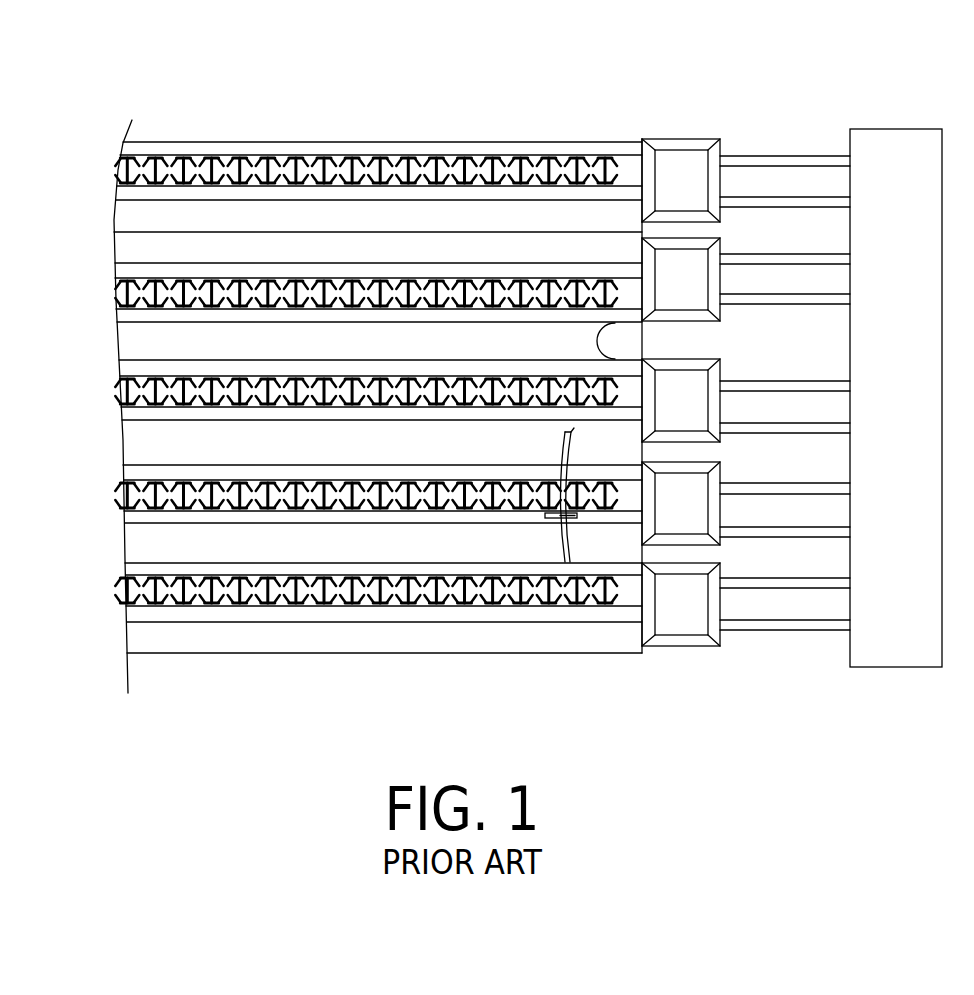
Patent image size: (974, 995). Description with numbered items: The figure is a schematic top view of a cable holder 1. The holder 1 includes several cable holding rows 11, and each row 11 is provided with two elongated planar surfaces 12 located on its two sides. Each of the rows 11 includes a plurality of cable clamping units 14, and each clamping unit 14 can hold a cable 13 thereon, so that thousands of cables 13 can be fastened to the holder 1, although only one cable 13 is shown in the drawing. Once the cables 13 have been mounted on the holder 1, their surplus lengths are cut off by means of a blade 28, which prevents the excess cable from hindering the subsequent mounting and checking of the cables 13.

The cable holder 1 is at (683, 113).
The cable holding row 11 is at (330, 157).
The elongated planar surface 12 is at (460, 200).
The cable 13 is at (577, 520).
The cable clamping unit 14 is at (380, 493).
The blade 28 is at (632, 524).